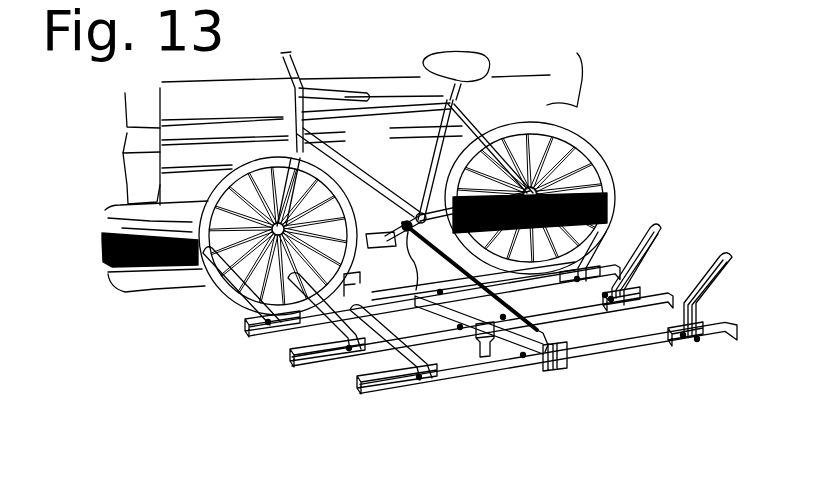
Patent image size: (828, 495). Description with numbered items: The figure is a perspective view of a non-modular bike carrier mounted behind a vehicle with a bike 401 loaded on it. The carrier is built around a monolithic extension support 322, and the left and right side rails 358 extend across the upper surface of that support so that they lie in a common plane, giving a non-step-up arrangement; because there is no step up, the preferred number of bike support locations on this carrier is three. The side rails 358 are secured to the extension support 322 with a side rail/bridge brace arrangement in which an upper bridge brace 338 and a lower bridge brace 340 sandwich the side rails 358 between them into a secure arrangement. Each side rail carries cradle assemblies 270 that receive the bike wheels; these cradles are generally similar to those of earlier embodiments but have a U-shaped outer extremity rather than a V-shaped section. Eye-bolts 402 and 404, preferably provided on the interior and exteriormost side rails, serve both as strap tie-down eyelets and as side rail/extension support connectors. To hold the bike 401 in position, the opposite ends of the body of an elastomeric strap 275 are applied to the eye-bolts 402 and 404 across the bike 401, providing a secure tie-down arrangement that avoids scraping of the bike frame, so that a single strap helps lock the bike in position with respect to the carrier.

The bike 401 is at (587, 147).
The eye-bolt 402 is at (345, 334).
The elastomeric strap 275 is at (625, 262).
The cradle assembly 270 is at (716, 260).
The side rail 358 is at (370, 390).
The upper bridge brace 338 is at (483, 348).
The monolithic extension support 322 is at (515, 337).
The lower bridge brace 340 is at (555, 371).
The eye-bolt 404 is at (567, 352).